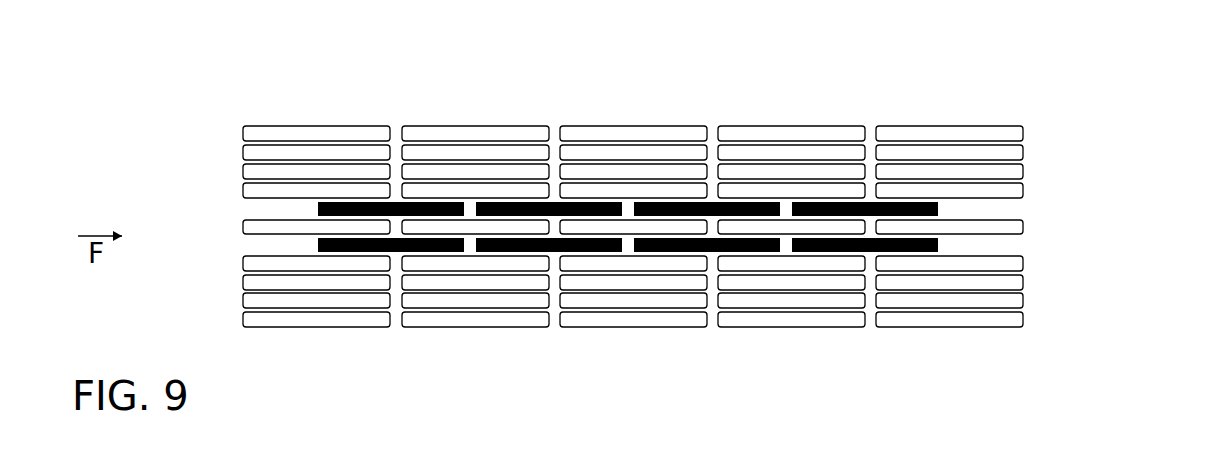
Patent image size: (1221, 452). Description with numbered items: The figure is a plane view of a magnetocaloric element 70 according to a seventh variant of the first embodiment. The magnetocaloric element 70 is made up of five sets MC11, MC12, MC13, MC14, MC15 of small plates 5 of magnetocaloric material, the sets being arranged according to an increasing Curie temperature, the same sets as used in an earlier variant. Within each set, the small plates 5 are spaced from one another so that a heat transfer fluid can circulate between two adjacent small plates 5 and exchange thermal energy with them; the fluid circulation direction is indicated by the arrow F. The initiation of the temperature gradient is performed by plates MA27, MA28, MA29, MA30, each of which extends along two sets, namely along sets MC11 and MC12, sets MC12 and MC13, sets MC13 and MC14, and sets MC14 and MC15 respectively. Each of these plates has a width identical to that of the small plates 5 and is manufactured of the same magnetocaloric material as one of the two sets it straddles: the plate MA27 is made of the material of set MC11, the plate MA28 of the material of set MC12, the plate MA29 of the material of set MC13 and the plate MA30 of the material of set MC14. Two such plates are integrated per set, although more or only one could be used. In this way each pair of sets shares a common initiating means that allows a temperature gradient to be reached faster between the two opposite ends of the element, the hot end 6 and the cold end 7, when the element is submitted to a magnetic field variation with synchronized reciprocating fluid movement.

The magnetocaloric element 70 is at (1113, 153).
The set of plates of magnetocaloric material MC11 is at (322, 113).
The set of plates of magnetocaloric material MC12 is at (495, 113).
The set of plates of magnetocaloric material MC13 is at (657, 110).
The set of plates of magnetocaloric material MC14 is at (803, 110).
The set of plates of magnetocaloric material MC15 is at (963, 112).
The initiating plate MA27 is at (420, 216).
The initiating plate MA28 is at (610, 215).
The initiating plate MA29 is at (700, 215).
The initiating plate MA30 is at (840, 215).
The small plates 5 is at (968, 188).
The hot end 6 is at (1052, 257).
The cold end 7 is at (223, 223).